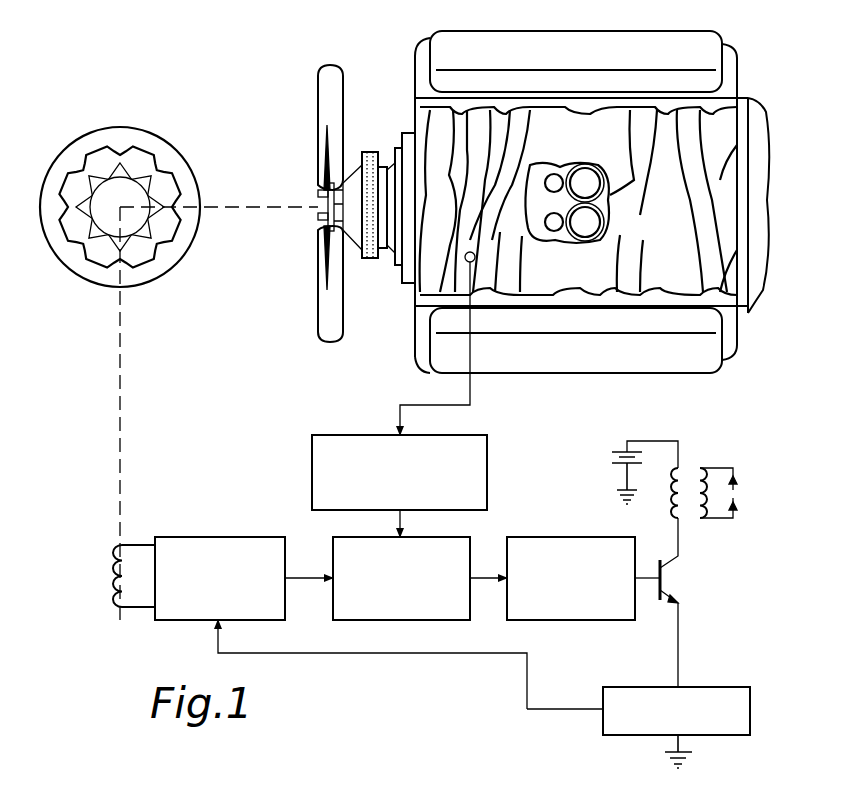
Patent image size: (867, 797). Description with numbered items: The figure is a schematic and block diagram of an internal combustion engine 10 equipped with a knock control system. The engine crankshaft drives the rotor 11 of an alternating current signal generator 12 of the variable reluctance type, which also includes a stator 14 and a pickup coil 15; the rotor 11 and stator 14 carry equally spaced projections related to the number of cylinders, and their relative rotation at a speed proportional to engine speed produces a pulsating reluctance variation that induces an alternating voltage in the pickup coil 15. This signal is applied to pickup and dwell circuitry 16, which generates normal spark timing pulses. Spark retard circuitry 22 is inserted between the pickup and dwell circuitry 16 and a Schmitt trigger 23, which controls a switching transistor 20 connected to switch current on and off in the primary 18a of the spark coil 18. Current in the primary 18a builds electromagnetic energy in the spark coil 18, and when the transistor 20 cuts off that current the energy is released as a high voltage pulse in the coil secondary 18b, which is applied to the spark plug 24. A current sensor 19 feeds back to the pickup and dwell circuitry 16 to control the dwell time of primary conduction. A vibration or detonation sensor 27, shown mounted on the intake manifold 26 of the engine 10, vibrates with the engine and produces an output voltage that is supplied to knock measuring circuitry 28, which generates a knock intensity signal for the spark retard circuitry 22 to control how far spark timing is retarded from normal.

The internal combustion engine 10 is at (412, 52).
The rotor 11 is at (137, 197).
The alternating current signal generator 12 is at (109, 124).
The stator 14 is at (175, 245).
The pickup coil 15 is at (110, 568).
The pickup and dwell circuitry 16 is at (253, 536).
The spark coil 18 is at (705, 486).
The primary 18a is at (675, 518).
The coil secondary 18b is at (702, 482).
The current sensor 19 is at (625, 728).
The switching transistor 20 is at (672, 570).
The spark retard circuitry 22 is at (460, 624).
The Schmitt trigger 23 is at (601, 536).
The spark plug 24 is at (737, 496).
The intake manifold 26 is at (640, 222).
The vibration or detonation sensor 27 is at (466, 261).
The knock measuring circuitry 28 is at (338, 434).